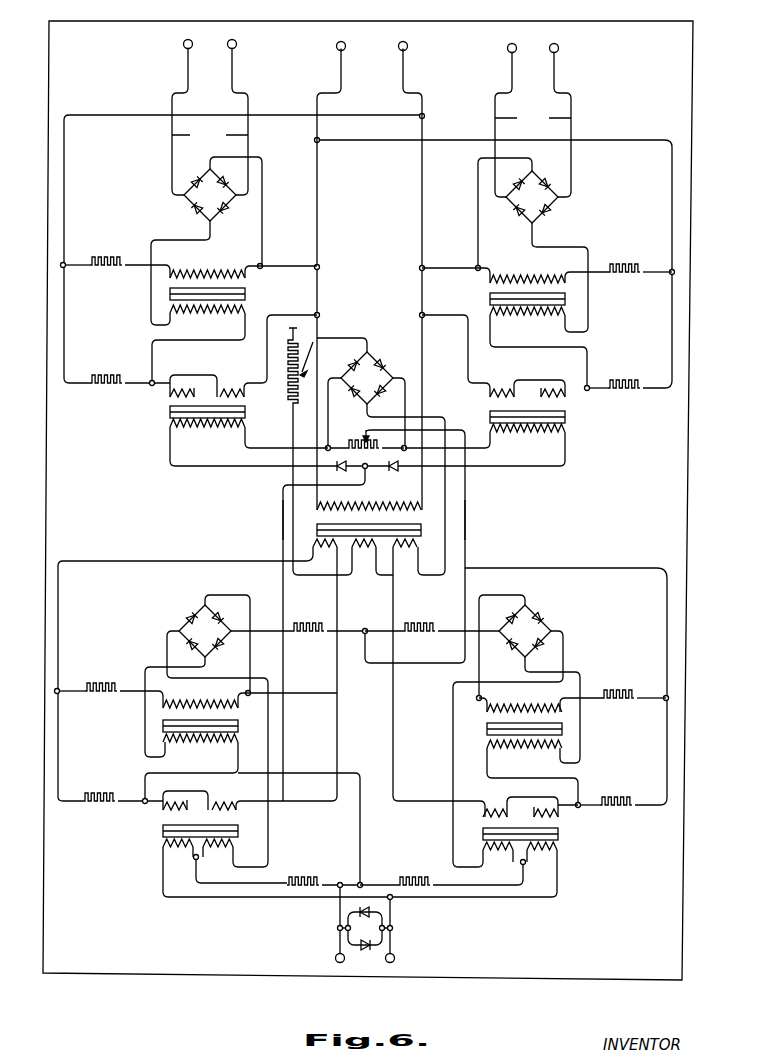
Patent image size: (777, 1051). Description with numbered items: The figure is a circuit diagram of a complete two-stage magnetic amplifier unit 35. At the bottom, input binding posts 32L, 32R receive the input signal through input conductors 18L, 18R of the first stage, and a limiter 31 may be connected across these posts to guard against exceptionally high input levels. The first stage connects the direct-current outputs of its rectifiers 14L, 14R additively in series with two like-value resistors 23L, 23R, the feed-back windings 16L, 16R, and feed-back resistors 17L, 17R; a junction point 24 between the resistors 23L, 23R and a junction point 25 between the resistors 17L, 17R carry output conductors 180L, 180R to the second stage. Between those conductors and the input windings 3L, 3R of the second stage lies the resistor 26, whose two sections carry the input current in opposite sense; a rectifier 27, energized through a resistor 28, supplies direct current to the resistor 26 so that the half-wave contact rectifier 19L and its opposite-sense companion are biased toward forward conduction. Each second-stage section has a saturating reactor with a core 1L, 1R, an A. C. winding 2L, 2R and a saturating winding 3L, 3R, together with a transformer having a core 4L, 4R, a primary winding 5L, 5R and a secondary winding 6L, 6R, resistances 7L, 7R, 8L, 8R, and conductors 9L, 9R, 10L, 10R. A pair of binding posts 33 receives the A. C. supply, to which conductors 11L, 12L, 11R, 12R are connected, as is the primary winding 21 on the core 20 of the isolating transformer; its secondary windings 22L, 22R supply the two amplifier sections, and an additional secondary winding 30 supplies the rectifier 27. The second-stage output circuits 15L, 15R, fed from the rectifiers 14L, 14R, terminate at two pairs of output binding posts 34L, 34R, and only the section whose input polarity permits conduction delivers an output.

The magnetic amplifier unit 35 is at (713, 44).
The output binding posts 34L is at (210, 109).
The A. C. supply binding posts 33 is at (372, 37).
The output binding posts 34R is at (533, 110).
The output circuit 15L is at (210, 135).
The output circuit 15R is at (533, 118).
The rectifier 14L is at (217, 418).
The rectifier 14R is at (520, 421).
The conductor 9L is at (246, 426).
The conductor 9R is at (491, 429).
The conductor 10L is at (166, 489).
The conductor 10R is at (563, 493).
The conductor 12L is at (241, 456).
The conductor 12R is at (494, 472).
The conductor 11L is at (318, 228).
The conductor 11R is at (420, 228).
The resistance 7L is at (113, 473).
The resistance 7R is at (617, 478).
The primary winding 5L is at (250, 481).
The primary winding 5R is at (493, 485).
The transformer core 4L is at (217, 513).
The transformer core 4R is at (493, 579).
The secondary winding 6L is at (252, 595).
The secondary winding 6R is at (537, 556).
The resistance 8L is at (114, 581).
The resistance 8R is at (608, 586).
The A. C. winding 2L is at (202, 398).
The A. C. winding 2R is at (529, 399).
The resistor 28 is at (305, 451).
The rectifier 27 is at (381, 456).
The resistor 26 is at (396, 543).
The saturating reactor core 1L is at (215, 622).
The saturating reactor core 1R is at (511, 627).
The saturating winding 3L is at (276, 658).
The saturating winding 3R is at (477, 660).
The half-wave contact rectifier 19L is at (335, 470).
The primary winding 21 is at (369, 499).
The isolating transformer core 20 is at (421, 532).
The conductor 180L is at (283, 523).
The conductor 180R is at (466, 516).
The secondary winding 22L is at (317, 568).
The secondary winding 30 is at (372, 568).
The secondary winding 22R is at (414, 568).
The resistor 23L is at (297, 619).
The junction point 24 is at (364, 620).
The resistor 23R is at (432, 619).
The feed-back winding 16L is at (217, 754).
The feed-back winding 16R is at (498, 862).
The feed-back resistor 17L is at (321, 874).
The feed-back resistor 17R is at (396, 874).
The junction point 25 is at (372, 877).
The limiter 31 is at (367, 927).
The input conductor 18L is at (325, 920).
The input conductor 18R is at (403, 924).
The input binding post 32L is at (322, 966).
The input binding post 32R is at (407, 966).